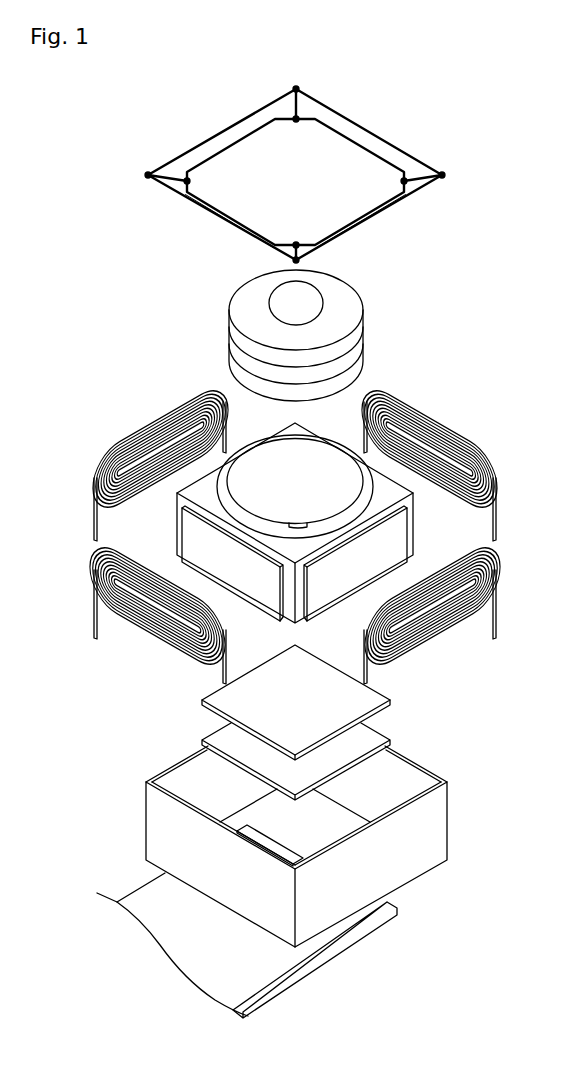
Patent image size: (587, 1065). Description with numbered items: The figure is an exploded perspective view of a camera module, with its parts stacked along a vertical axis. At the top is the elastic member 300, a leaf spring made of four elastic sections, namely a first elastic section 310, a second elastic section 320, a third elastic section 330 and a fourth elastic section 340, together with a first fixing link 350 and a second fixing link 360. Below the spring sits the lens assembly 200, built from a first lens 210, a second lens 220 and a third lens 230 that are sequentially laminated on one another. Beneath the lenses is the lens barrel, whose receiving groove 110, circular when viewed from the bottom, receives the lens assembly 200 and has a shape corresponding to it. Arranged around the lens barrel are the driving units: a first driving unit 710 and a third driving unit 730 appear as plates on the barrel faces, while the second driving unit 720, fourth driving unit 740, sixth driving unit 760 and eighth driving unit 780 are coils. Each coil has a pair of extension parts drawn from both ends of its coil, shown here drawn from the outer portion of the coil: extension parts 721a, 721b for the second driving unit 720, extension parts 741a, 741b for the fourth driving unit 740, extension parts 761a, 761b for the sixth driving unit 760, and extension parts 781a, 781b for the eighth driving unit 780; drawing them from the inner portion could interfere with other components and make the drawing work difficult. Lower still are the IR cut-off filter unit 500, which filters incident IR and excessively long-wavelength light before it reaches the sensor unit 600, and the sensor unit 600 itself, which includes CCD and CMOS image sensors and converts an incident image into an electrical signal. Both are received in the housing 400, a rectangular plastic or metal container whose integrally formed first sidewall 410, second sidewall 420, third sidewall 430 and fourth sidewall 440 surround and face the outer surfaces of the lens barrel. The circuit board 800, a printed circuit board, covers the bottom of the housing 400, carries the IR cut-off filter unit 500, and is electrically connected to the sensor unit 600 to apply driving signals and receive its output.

The receiving groove 110 is at (344, 472).
The lens assembly 200 is at (337, 335).
The first lens 210 is at (363, 323).
The second lens 220 is at (363, 341).
The third lens 230 is at (363, 358).
The elastic member 300 is at (295, 169).
The first elastic section 310 is at (298, 104).
The second elastic section 320 is at (386, 136).
The third elastic section 330 is at (277, 248).
The fourth elastic section 340 is at (172, 172).
The first fixing link 350 is at (236, 146).
The second fixing link 360 is at (215, 136).
The housing 400 is at (299, 839).
The first sidewall 410 is at (397, 875).
The second sidewall 420 is at (158, 823).
The third sidewall 430 is at (175, 765).
The fourth sidewall 440 is at (423, 764).
The IR cut-off filter unit 500 is at (323, 670).
The sensor unit 600 is at (383, 729).
The first driving unit 710 is at (403, 537).
The second driving unit 720 is at (460, 616).
The extension part 721a is at (438, 651).
The extension part 721b is at (496, 602).
The third driving unit 730 is at (188, 538).
The fourth driving unit 740 is at (128, 616).
The extension part 741a is at (94, 602).
The extension part 741b is at (220, 674).
The sixth driving unit 760 is at (150, 454).
The extension part 761a is at (226, 440).
The extension part 761b is at (94, 513).
The eighth driving unit 780 is at (438, 454).
The extension part 781a is at (496, 513).
The extension part 781b is at (364, 440).
The circuit board 800 is at (142, 890).